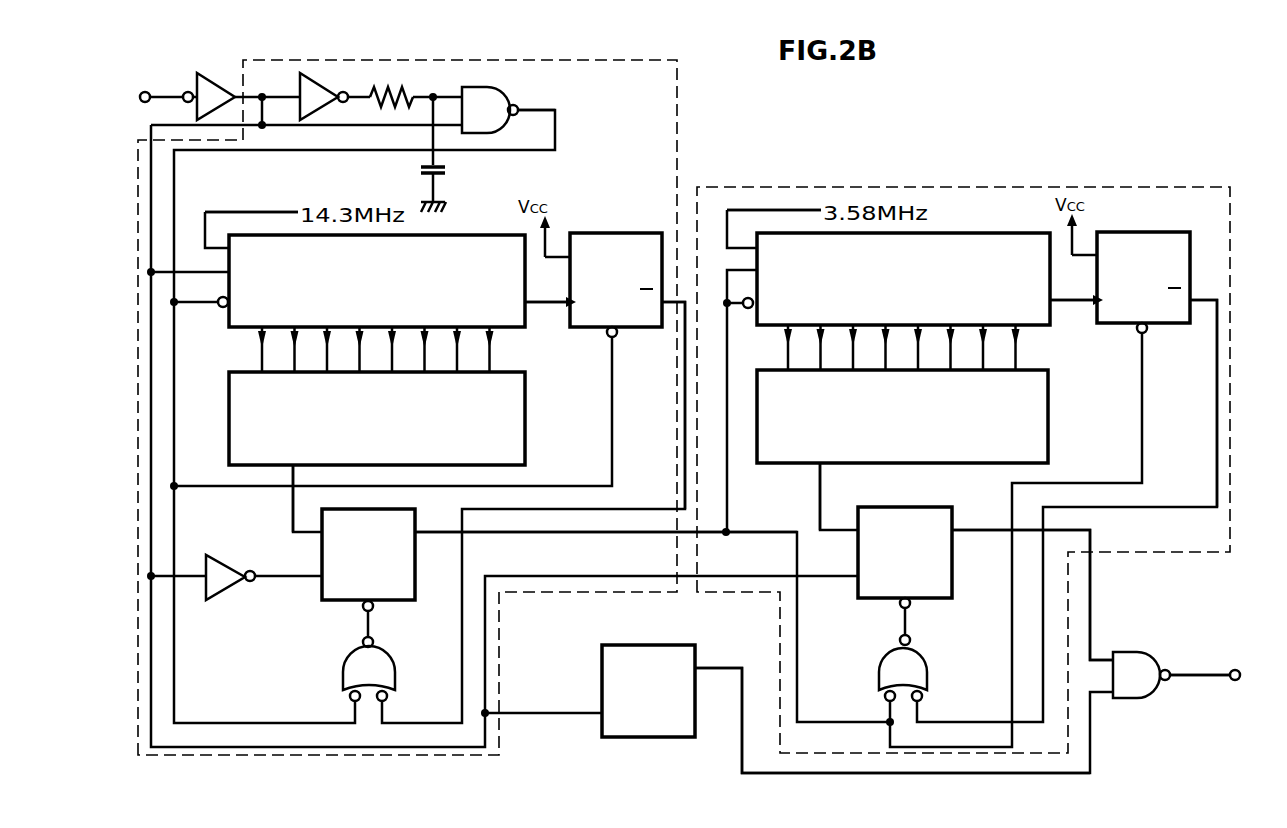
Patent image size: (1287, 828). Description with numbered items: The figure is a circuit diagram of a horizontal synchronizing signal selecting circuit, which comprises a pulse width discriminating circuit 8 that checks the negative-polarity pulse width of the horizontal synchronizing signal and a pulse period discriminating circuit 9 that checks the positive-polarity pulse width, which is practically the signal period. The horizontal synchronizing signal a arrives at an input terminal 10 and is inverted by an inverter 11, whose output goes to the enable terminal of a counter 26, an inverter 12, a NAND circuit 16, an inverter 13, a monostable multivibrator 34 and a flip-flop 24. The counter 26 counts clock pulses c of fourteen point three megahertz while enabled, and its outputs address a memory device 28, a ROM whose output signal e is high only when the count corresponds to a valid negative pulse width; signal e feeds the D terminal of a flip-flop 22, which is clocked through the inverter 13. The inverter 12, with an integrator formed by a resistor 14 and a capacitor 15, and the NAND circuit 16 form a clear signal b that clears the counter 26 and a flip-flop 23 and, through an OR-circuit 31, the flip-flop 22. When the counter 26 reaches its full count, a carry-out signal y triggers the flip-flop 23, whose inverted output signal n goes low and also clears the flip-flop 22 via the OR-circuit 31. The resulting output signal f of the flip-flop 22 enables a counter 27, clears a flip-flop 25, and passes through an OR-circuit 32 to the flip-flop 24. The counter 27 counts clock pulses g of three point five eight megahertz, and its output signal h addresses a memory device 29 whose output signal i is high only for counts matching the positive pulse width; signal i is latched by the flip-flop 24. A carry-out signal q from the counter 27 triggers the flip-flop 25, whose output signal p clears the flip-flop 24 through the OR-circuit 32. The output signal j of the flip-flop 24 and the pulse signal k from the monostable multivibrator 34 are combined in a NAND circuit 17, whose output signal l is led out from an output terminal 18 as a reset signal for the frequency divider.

The pulse width discriminating circuit 8 is at (500, 650).
The pulse period discriminating circuit 9 is at (778, 620).
The input terminal 10 is at (146, 91).
The inverter 11 is at (214, 82).
The inverter 12 is at (322, 80).
The inverter 13 is at (230, 569).
The resistor 14 is at (395, 87).
The capacitor 15 is at (445, 170).
The NAND circuit 16 is at (491, 86).
The NAND circuit 17 is at (1137, 660).
The output terminal 18 is at (1235, 669).
The flip-flop 22 is at (410, 521).
The flip-flop 23 is at (638, 243).
The flip-flop 24 is at (933, 513).
The flip-flop 25 is at (1178, 238).
The counter 26 is at (463, 240).
The counter 27 is at (992, 238).
The memory device 28 is at (527, 392).
The memory device 29 is at (1050, 382).
The OR-circuit 31 is at (387, 665).
The OR-circuit 32 is at (923, 672).
The monostable multivibrator 34 is at (687, 648).
The horizontal synchronizing signal a is at (176, 92).
The output signal of NAND circuit 16 b is at (538, 108).
The clock pulses c is at (253, 211).
The signal d is at (491, 349).
The output signal of memory device 28 e is at (293, 511).
The output signal of flip-flop 22 f is at (557, 534).
The clock pulses g is at (762, 209).
The output signal of counter 27 h is at (1018, 355).
The output signal of memory device 29 i is at (822, 495).
The output signal of flip-flop 24 j is at (1090, 628).
The output signal of monostable multivibrator 34 k is at (743, 752).
The output signal of NAND circuit 17 l is at (1207, 679).
The output signal of flip-flop 23 n is at (685, 355).
The output signal of flip-flop 25 p is at (1217, 350).
The carry-out signal q is at (1068, 299).
The carry-out signal y is at (544, 305).